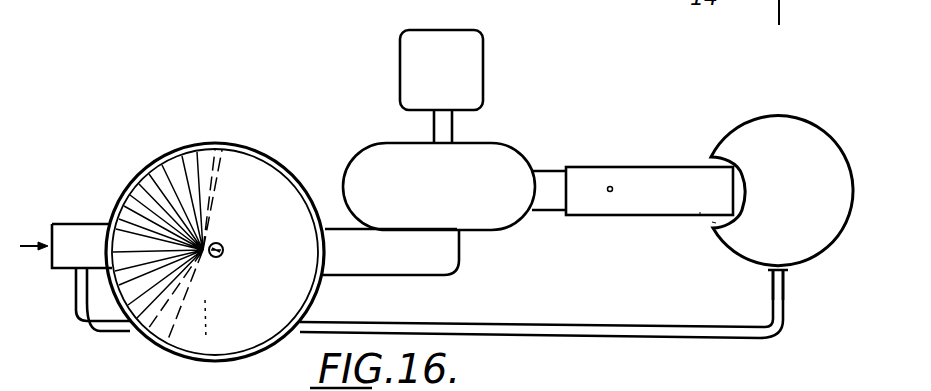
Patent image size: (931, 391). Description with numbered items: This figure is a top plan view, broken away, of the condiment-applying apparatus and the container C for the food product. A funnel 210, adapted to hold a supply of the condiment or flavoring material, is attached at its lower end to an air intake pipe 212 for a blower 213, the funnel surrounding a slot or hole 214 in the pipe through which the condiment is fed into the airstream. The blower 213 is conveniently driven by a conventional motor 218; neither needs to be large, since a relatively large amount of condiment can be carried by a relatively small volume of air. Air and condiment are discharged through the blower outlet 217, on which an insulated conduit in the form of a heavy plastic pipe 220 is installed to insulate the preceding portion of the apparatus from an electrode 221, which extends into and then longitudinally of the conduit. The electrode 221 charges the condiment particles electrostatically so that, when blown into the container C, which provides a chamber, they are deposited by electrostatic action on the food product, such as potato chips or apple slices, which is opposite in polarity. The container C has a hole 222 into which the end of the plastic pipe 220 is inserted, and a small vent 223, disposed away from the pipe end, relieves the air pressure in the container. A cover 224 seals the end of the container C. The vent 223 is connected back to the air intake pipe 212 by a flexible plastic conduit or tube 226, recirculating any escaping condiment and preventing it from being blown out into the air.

The funnel 210 is at (257, 167).
The air intake pipe 212 is at (68, 268).
The blower 213 is at (489, 155).
The slot or hole 214 is at (221, 255).
The blower outlet 217 is at (545, 180).
The motor 218 is at (467, 44).
The heavy plastic pipe 220 is at (652, 170).
The electrode 221 is at (610, 187).
The hole 222 is at (689, 198).
The vent 223 is at (786, 270).
The cover 224 is at (824, 207).
The conduit or tube 226 is at (86, 331).
The container C is at (702, 221).